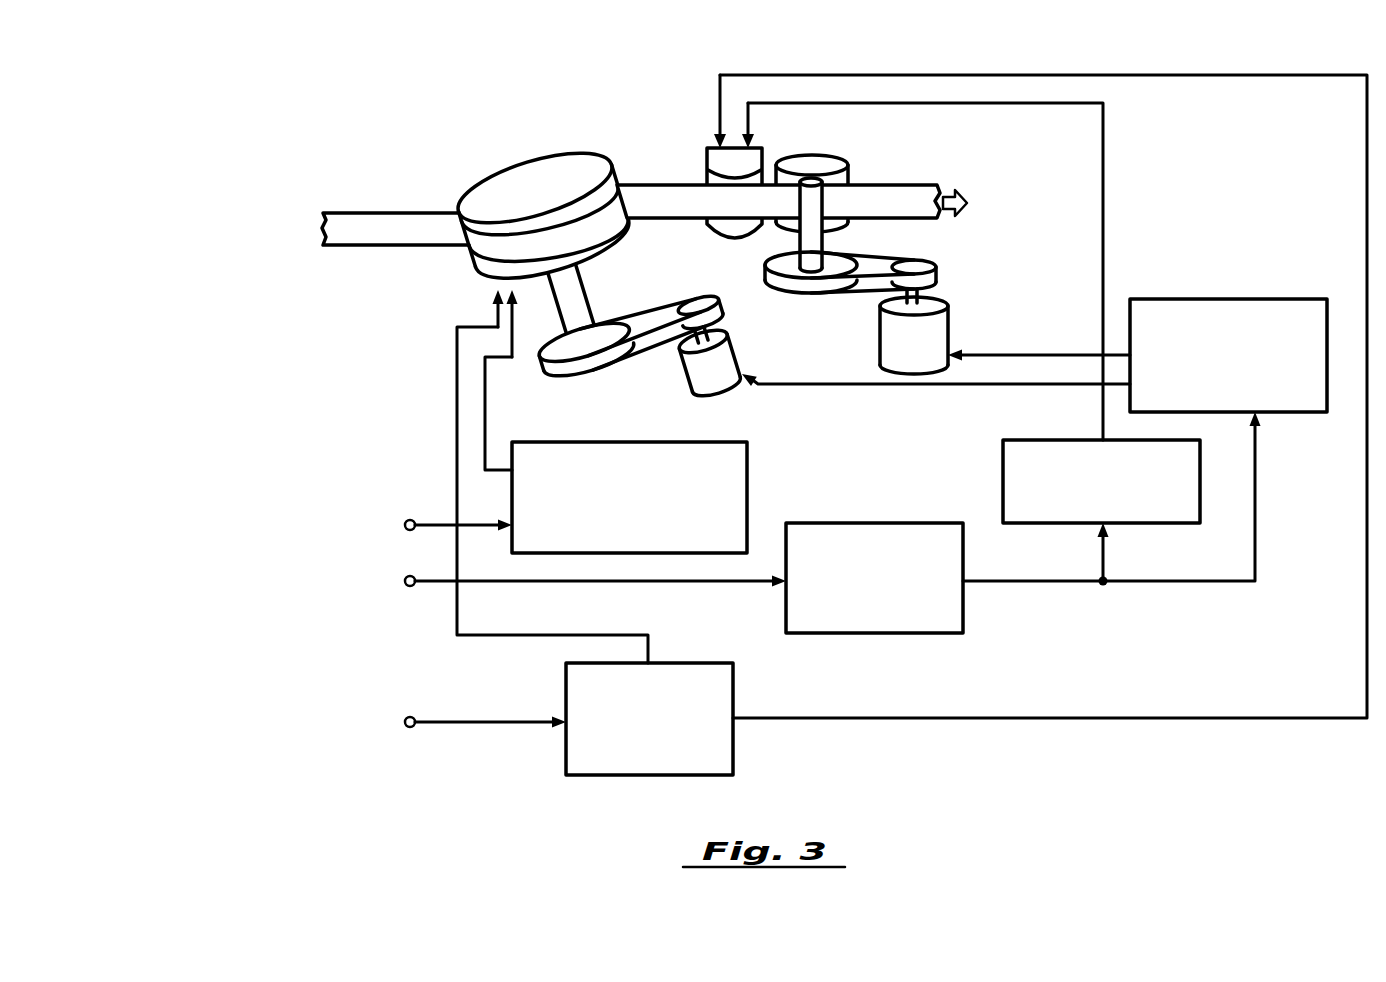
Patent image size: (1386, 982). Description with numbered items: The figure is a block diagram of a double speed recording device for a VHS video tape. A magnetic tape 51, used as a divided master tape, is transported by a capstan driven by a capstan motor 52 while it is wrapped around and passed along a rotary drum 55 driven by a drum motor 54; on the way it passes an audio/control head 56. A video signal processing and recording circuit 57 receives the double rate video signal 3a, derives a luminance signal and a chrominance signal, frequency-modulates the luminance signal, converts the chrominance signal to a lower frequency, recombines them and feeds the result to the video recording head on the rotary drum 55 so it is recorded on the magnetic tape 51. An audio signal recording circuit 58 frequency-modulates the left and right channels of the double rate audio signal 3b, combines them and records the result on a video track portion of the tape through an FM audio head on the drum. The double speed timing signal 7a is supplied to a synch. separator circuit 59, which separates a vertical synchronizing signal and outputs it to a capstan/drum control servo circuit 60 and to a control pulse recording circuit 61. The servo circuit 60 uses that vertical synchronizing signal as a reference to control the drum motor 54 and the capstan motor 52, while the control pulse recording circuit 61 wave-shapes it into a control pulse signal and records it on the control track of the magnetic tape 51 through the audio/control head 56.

The magnetic tape 51 is at (343, 213).
The rotary drum 55 is at (495, 173).
The audio/control head 56 is at (705, 160).
The capstan motor 52 is at (948, 327).
The capstan/drum control servo circuit 60 is at (1276, 298).
The drum motor 54 is at (686, 376).
The video signal processing and recording circuit 57 is at (747, 465).
The control pulse recording circuit 61 is at (1002, 465).
The synch. separator circuit 59 is at (882, 634).
The audio signal recording circuit 58 is at (733, 750).
The double rate video signal 3a is at (337, 513).
The double speed timing signal 7a is at (474, 572).
The double rate audio signal 3b is at (364, 712).